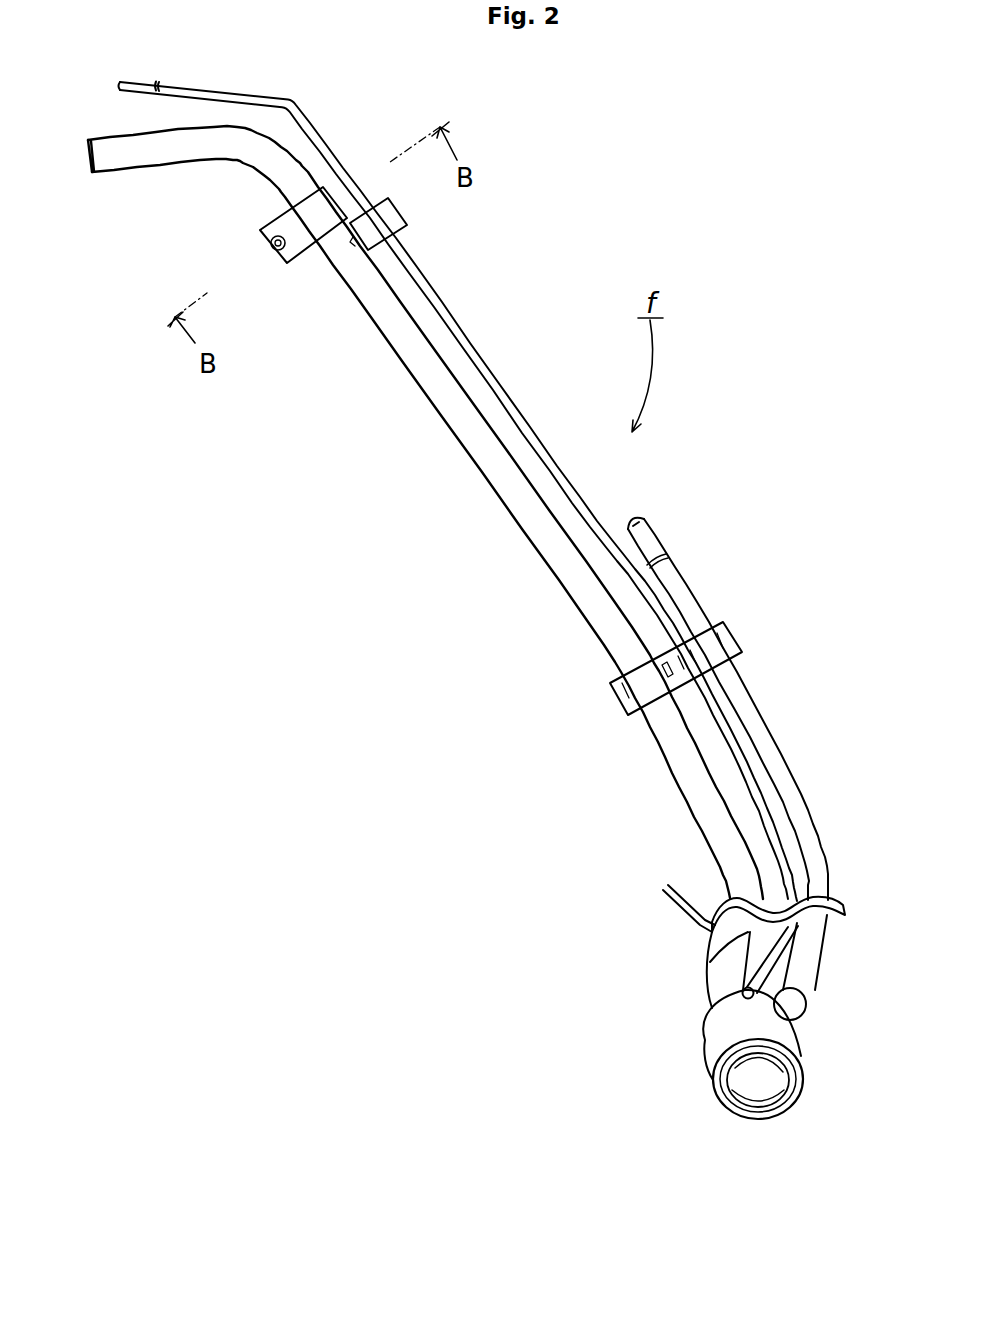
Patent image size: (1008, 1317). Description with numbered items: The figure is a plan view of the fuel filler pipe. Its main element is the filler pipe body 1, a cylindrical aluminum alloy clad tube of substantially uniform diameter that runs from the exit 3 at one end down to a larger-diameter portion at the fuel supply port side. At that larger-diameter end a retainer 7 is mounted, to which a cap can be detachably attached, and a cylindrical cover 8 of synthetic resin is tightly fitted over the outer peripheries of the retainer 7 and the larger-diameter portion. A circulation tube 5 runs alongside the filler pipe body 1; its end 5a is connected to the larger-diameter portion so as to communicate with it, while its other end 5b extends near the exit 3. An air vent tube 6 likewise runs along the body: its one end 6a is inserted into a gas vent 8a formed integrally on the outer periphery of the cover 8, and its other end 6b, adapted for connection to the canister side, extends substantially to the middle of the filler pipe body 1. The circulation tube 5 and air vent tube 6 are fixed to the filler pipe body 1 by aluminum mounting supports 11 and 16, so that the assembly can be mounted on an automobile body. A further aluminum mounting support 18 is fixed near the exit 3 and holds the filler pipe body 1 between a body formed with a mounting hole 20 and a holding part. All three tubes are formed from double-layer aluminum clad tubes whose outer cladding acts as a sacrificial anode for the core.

The filler pipe body 1 is at (507, 480).
The exit 3 is at (87, 152).
The circulation tube 5 is at (477, 362).
The end of circulation tube 5a is at (733, 987).
The other end of circulation tube 5b is at (141, 81).
The air vent tube 6 is at (766, 750).
The end of air vent tube 6a is at (785, 978).
The other end of air vent tube 6b is at (648, 537).
The retainer 7 is at (745, 1113).
The cover 8 is at (715, 1048).
The gas vent 8a is at (805, 990).
The mounting support 11 is at (710, 953).
The mounting support 16 is at (712, 645).
The mounting support 18 is at (305, 255).
The mounting hole 20 is at (270, 252).